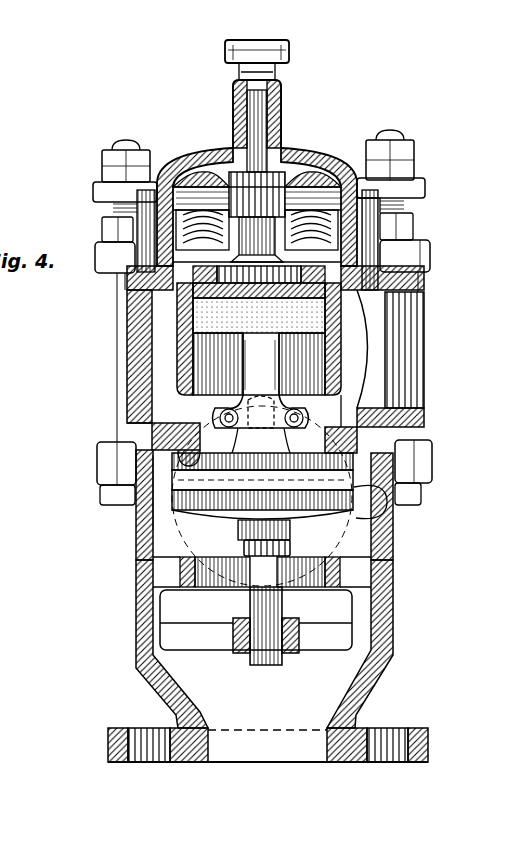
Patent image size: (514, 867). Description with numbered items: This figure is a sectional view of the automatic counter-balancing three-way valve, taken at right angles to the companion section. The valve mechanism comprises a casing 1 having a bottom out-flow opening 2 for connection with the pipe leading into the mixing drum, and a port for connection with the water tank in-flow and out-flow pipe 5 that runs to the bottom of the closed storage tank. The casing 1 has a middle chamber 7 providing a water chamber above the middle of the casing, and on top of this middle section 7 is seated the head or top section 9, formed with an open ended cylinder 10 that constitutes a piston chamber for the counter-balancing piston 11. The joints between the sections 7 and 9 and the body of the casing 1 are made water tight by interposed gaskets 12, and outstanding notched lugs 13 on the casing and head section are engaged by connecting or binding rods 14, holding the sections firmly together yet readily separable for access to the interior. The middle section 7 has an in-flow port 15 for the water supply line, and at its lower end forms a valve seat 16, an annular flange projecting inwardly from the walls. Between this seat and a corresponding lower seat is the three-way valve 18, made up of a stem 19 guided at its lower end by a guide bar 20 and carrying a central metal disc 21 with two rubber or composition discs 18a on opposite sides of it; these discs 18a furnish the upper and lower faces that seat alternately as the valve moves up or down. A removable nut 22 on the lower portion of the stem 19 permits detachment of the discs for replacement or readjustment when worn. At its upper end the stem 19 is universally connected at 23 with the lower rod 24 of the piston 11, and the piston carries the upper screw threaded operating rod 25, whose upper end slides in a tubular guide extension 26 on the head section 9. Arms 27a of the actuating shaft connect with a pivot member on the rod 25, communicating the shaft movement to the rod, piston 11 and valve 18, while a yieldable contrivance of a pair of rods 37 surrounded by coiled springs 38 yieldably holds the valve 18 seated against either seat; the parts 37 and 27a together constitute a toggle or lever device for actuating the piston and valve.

The casing 1 is at (150, 580).
The bottom out-flow opening 2 is at (272, 760).
The water tank in-flow and out-flow pipe 5 is at (3, 172).
The middle chamber 7 is at (143, 325).
The head or top section 9 is at (265, 190).
The open ended cylinder 10 is at (312, 352).
The counter-balancing piston 11 is at (305, 315).
The gaskets 12 is at (385, 262).
The notched lugs 13 is at (424, 252).
The connecting or binding rods 14 is at (400, 272).
The in-flow port 15 is at (414, 380).
The valve seat 16 is at (195, 448).
The three-way valve 18 is at (362, 517).
The rubber or composition discs 18a is at (424, 413).
The stem 19 is at (247, 620).
The guide bar 20 is at (326, 640).
The central metal disc 21 is at (173, 477).
The removable nut 22 is at (240, 528).
The universal connection 23 is at (220, 417).
The lower rod 24 is at (270, 372).
The upper screw threaded operating rod 25 is at (306, 188).
The tubular guide extension 26 is at (281, 99).
The arms 27a is at (385, 250).
The rods 37 is at (207, 176).
The coiled springs 38 is at (257, 233).